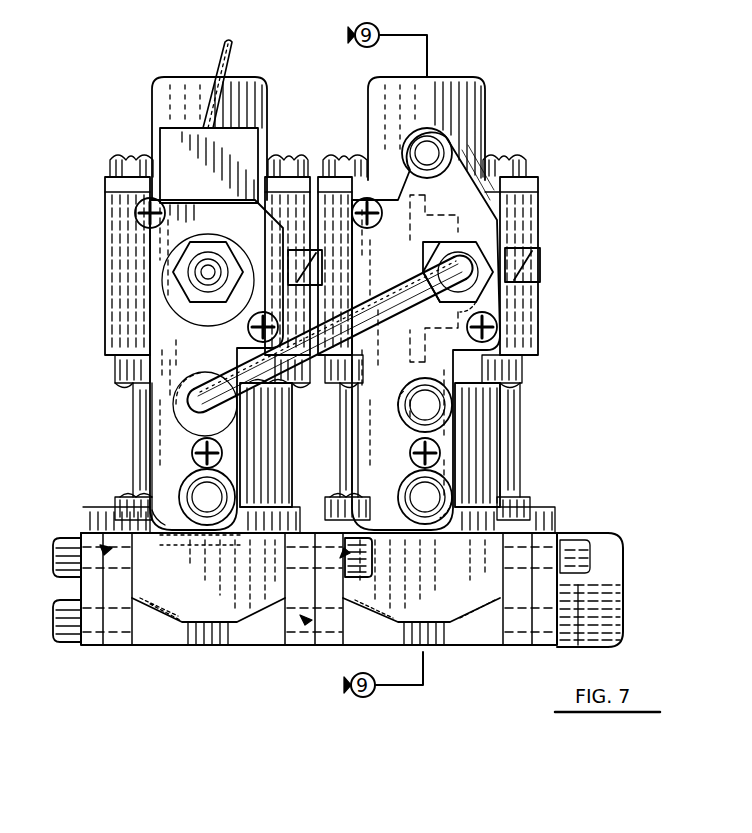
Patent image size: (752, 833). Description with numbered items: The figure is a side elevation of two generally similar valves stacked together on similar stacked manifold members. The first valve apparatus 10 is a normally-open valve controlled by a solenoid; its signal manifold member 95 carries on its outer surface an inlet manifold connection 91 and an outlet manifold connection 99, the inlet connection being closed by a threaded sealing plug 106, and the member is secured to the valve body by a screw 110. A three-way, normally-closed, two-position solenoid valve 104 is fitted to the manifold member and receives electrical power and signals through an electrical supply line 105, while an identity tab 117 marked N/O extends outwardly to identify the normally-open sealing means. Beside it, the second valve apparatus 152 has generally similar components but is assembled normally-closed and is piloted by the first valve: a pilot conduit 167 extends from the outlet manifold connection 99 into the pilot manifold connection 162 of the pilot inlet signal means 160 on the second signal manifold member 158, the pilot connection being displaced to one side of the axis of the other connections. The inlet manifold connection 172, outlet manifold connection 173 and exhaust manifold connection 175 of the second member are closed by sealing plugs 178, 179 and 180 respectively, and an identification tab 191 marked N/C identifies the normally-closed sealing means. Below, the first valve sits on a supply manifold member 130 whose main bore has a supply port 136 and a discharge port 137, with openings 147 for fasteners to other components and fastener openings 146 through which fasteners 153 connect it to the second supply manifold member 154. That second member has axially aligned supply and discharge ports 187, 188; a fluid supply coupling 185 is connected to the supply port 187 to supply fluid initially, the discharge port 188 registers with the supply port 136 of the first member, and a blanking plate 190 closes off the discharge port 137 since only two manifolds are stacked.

The valve apparatus 10 is at (106, 403).
The inlet manifold connection 91 is at (185, 495).
The signal manifold member 95 is at (163, 312).
The outlet manifold connection 99 is at (185, 410).
The solenoid valve 104 is at (180, 148).
The electrical supply line 105 is at (207, 56).
The threaded sealing plug 106 is at (207, 495).
The screw 110 is at (135, 214).
The identity tab 117 is at (318, 262).
The supply manifold member 130 is at (162, 637).
The supply port 136 is at (262, 590).
The discharge port 137 is at (115, 590).
The fastener openings 146 is at (105, 548).
The openings 147 is at (207, 632).
The second valve apparatus 152 is at (556, 116).
The fasteners 153 is at (352, 555).
The second supply manifold member 154 is at (492, 628).
The second signal manifold member 158 is at (488, 226).
The pilot inlet signal means 160 is at (484, 302).
The pilot manifold connection 162 is at (447, 250).
The pilot conduit 167 is at (322, 362).
The inlet manifold connection 172 is at (420, 497).
The outlet manifold connection 173 is at (438, 400).
The exhaust manifold connection 175 is at (413, 130).
The sealing plug 178 is at (427, 497).
The sealing plug 179 is at (425, 412).
The sealing plug 180 is at (421, 153).
The fluid supply coupling 185 is at (602, 556).
The supply port 187 is at (497, 585).
The discharge port 188 is at (330, 590).
The blanking plate 190 is at (88, 590).
The identification tab 191 is at (537, 262).